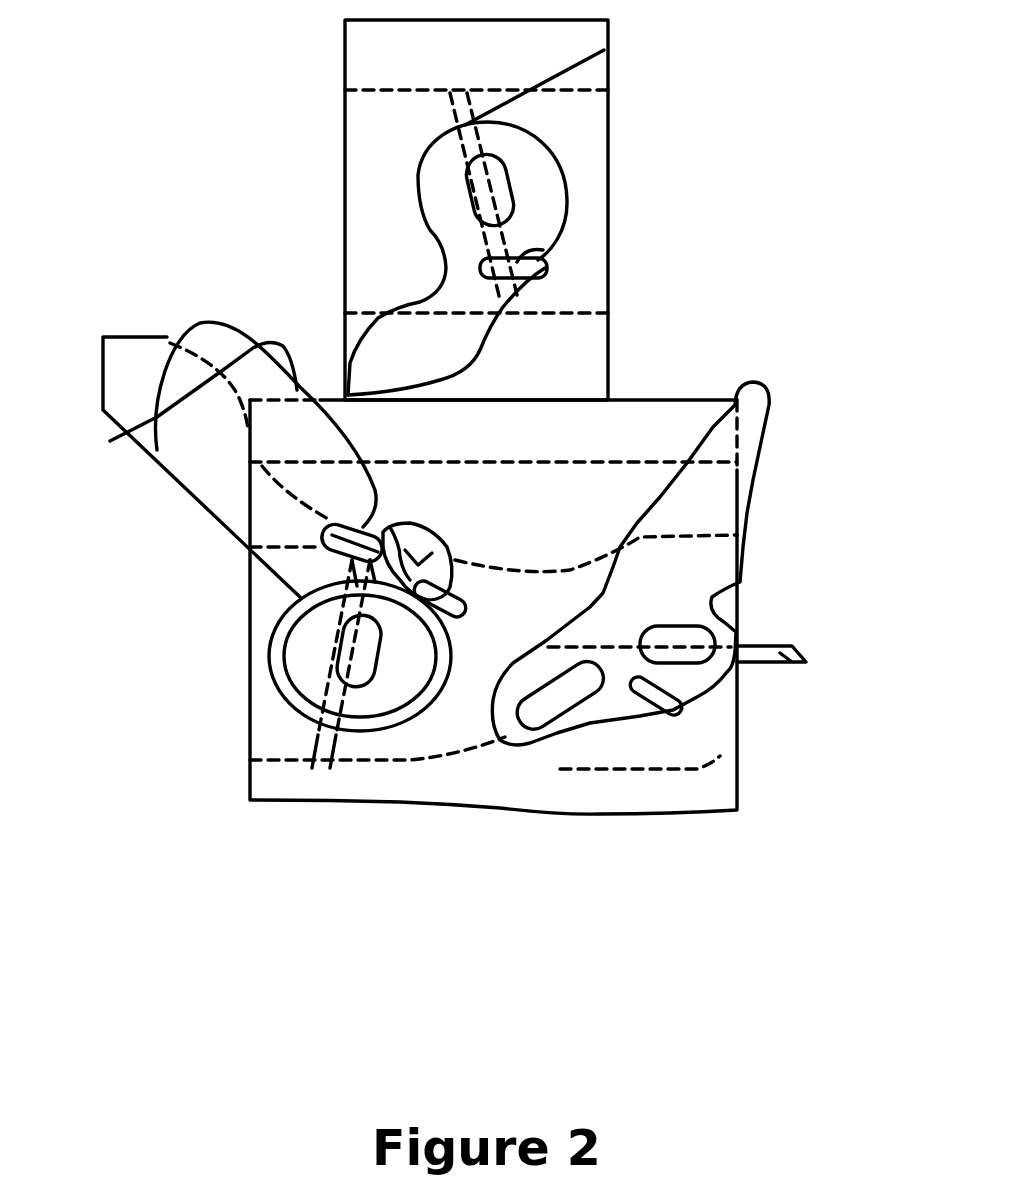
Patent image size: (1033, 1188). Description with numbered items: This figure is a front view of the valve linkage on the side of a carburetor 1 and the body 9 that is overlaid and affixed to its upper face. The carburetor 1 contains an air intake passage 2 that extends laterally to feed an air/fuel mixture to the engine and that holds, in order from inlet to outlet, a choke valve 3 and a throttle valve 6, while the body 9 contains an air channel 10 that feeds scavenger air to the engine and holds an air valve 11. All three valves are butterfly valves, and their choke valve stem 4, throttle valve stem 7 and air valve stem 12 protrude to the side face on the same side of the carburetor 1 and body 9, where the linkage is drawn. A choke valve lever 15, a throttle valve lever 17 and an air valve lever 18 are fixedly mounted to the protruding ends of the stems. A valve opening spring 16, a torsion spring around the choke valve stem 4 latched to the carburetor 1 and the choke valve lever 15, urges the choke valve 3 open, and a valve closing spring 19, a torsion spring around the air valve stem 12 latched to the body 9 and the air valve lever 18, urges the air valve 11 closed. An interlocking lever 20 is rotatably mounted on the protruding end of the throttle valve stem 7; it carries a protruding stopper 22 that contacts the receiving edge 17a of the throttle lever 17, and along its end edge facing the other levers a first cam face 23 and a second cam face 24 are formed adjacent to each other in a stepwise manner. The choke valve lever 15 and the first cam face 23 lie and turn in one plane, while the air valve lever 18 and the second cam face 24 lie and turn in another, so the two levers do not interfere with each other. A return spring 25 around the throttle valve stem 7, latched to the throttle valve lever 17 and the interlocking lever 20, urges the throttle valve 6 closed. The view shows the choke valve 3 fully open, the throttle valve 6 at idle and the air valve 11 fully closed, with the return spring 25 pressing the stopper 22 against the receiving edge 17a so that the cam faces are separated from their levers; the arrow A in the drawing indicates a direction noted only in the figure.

The carburetor 1 is at (540, 787).
The air intake passage 2 is at (720, 756).
The choke valve 3 is at (782, 665).
The choke valve stem 4 is at (737, 609).
The throttle valve 6 is at (310, 740).
The throttle valve stem 7 is at (337, 658).
The body 9 is at (370, 57).
The air channel 10 is at (613, 297).
The air valve 11 is at (527, 93).
The air valve stem 12 is at (513, 187).
The choke valve lever 15 is at (712, 496).
The valve opening spring 16 is at (668, 710).
The throttle valve lever 17 is at (367, 700).
The receiving edge 17a is at (430, 532).
The air valve lever 18 is at (527, 150).
The valve closing spring 19 is at (546, 256).
The interlocking lever 20 is at (205, 470).
The stopper 22 is at (383, 527).
The first cam face 23 is at (110, 441).
The second cam face 24 is at (140, 337).
The return spring 25 is at (450, 560).
The direction arrow A is at (223, 313).